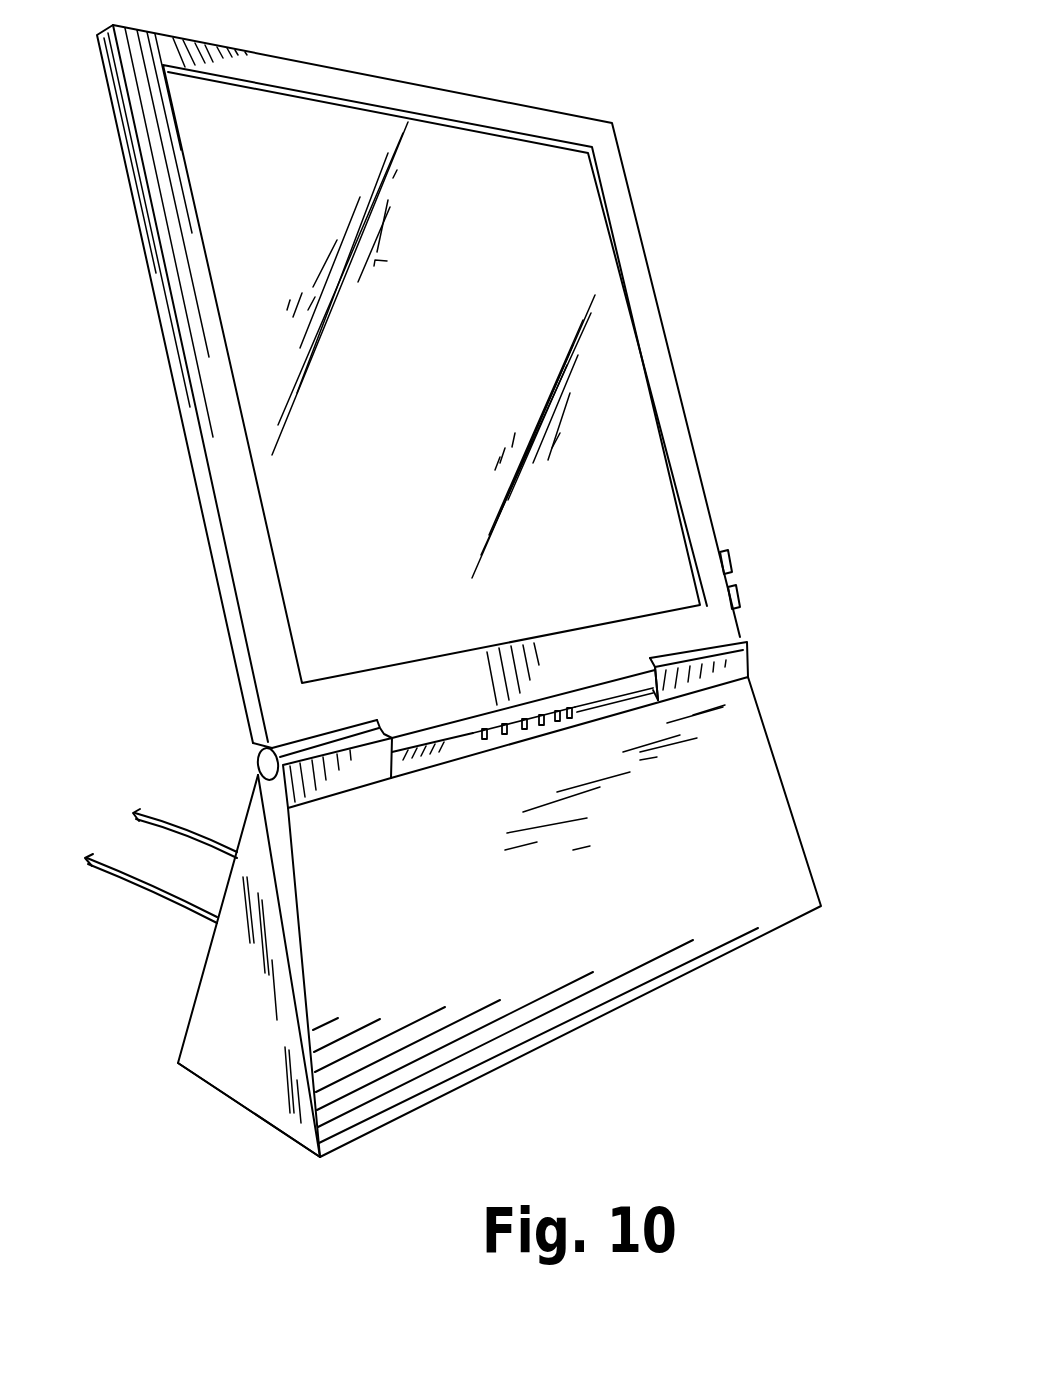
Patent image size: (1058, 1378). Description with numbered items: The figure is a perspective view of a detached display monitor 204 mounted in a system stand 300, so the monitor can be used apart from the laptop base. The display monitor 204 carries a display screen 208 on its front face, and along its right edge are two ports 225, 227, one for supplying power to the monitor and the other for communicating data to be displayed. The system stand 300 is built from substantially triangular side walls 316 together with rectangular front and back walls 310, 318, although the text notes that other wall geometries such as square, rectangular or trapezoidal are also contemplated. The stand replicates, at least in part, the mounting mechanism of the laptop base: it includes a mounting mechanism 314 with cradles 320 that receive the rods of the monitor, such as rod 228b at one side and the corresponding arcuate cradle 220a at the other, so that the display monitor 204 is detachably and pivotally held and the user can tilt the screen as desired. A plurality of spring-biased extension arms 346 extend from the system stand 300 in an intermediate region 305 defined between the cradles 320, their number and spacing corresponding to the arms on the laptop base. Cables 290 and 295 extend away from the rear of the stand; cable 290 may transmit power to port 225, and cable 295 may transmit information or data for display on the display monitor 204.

The display monitor 204 is at (662, 377).
The display screen 208 is at (578, 260).
The port 225 is at (731, 557).
The port 227 is at (740, 597).
The rod 228b is at (745, 647).
The cradle 320 is at (752, 657).
The arcuate cradle 220a is at (262, 774).
The spring-biased extension arms 346 is at (550, 716).
The intermediate region 305 is at (612, 707).
The mounting mechanism 314 is at (475, 706).
The system stand 300 is at (758, 815).
The front wall 310 is at (512, 965).
The side walls 316 is at (810, 853).
The back wall 318 is at (197, 983).
The cable 290 is at (163, 822).
The cable 295 is at (112, 872).